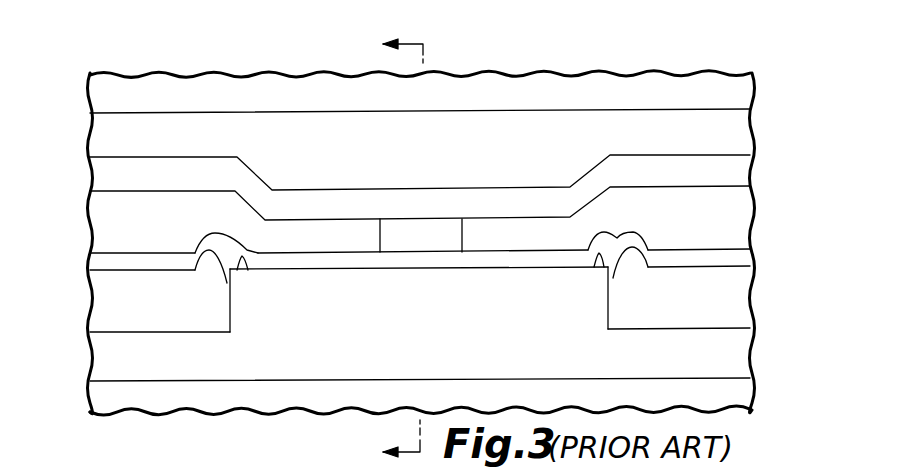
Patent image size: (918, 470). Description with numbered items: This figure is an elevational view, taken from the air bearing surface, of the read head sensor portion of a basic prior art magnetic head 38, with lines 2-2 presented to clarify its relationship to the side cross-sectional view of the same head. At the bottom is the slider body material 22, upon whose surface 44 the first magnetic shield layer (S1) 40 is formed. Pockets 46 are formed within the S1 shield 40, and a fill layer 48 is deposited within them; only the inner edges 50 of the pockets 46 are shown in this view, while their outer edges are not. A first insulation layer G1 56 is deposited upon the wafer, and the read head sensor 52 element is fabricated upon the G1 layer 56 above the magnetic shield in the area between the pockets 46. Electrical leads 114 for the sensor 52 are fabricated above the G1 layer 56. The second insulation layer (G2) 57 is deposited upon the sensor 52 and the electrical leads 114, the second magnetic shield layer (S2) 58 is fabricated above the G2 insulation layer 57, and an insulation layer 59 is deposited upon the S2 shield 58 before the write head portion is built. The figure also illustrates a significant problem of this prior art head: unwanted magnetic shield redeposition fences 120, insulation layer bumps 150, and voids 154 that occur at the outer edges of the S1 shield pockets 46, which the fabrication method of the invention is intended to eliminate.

The magnetic head 38 is at (194, 60).
The insulation layer 59 is at (744, 92).
The second magnetic shield layer (S2) 58 is at (744, 130).
The second insulation layer (G2) 57 is at (744, 170).
The electrical leads 114 is at (744, 214).
The voids 154 is at (226, 258).
The first insulation layer G1 56 is at (447, 262).
The pockets 46 is at (118, 292).
The insulation layer bumps 150 is at (195, 258).
The magnetic shield redeposition fences 120 is at (246, 266).
The read head sensor 52 is at (411, 230).
The inner edges 50 is at (622, 307).
The fill layer 48 is at (173, 313).
The surface 44 is at (431, 379).
The first magnetic shield layer (S1) 40 is at (515, 350).
The slider body material 22 is at (740, 390).
The lines 2- 2 is at (391, 249).